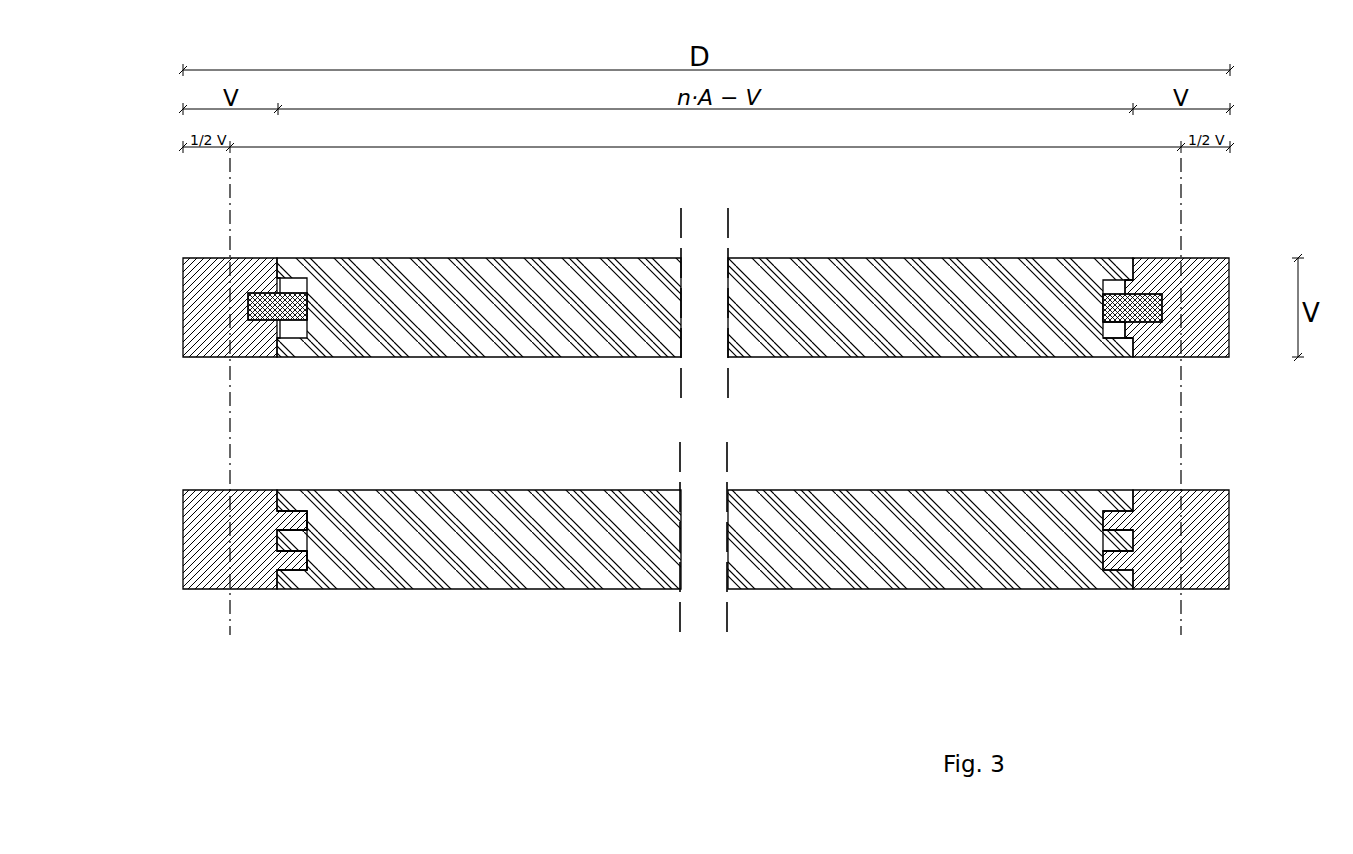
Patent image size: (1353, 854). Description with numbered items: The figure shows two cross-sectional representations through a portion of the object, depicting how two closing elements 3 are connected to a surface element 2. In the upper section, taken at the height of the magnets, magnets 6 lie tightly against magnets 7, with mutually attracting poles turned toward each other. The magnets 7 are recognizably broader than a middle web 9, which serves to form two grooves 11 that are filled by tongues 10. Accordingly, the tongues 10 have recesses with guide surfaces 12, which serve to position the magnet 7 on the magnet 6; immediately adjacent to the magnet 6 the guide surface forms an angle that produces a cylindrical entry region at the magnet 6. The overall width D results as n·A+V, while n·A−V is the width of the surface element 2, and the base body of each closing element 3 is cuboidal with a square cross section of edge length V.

The surface element 2 is at (347, 320).
The closing element 3 is at (200, 278).
The magnet 6 is at (271, 281).
The magnet 7 is at (295, 317).
The middle web 9 is at (288, 540).
The tongue 10 is at (298, 517).
The groove 11 is at (306, 508).
The guide surface 12 is at (1108, 322).